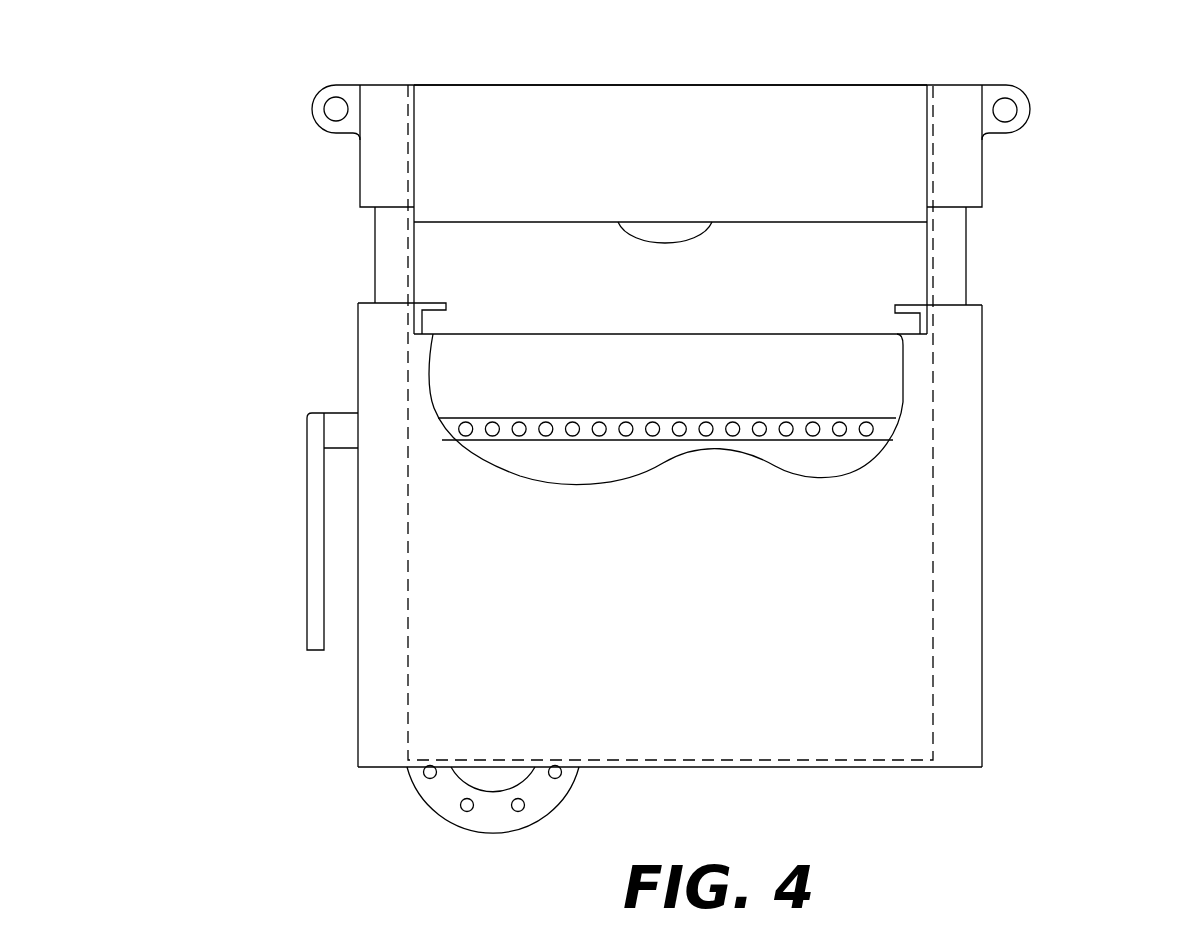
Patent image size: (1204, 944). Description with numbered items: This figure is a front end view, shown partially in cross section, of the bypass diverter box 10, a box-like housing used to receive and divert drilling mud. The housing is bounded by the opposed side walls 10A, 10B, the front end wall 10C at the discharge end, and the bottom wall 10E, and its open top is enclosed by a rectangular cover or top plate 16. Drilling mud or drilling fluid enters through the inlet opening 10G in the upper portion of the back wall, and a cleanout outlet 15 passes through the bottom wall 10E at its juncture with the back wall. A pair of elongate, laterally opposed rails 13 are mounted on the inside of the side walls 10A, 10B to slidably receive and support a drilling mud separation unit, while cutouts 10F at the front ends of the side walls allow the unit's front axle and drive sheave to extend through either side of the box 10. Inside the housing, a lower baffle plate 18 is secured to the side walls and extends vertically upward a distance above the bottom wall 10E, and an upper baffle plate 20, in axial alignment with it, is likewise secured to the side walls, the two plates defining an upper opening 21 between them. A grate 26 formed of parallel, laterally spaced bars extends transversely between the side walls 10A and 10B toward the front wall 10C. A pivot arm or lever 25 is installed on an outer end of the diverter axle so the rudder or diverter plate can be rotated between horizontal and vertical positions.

The bypass diverter box 10 is at (1103, 212).
The side wall 10A is at (358, 702).
The side wall 10B is at (982, 548).
The front end wall 10C is at (716, 612).
The bottom wall 10E is at (700, 768).
The cutouts 10F is at (395, 223).
The inlet opening 10G is at (713, 222).
The rails 13 is at (447, 312).
The cleanout outlet 15 is at (557, 803).
The top plate 16 is at (682, 85).
The lower baffle plate 18 is at (624, 382).
The upper baffle plate 20 is at (842, 102).
The upper opening 21 is at (608, 258).
The pivot arm 25 is at (307, 533).
The grate 26 is at (722, 411).